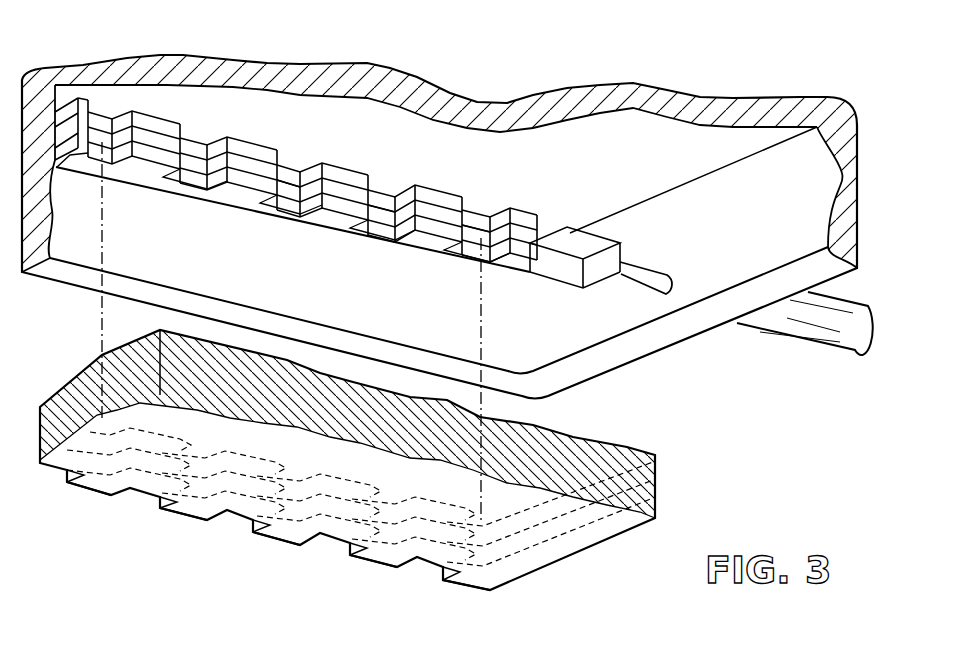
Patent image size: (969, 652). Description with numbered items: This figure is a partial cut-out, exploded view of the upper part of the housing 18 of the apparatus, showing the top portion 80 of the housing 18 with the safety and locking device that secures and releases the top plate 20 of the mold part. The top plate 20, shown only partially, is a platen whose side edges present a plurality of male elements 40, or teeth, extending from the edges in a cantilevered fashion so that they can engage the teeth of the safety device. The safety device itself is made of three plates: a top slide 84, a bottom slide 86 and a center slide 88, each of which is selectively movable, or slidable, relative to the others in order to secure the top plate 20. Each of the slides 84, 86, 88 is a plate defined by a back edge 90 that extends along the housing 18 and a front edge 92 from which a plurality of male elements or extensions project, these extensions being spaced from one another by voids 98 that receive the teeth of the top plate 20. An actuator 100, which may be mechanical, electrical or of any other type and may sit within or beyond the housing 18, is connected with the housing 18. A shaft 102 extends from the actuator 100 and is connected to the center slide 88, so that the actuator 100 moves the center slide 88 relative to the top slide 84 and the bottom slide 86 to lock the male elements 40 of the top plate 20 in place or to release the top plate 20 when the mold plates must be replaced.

The housing 18 is at (634, 157).
The top plate 20 is at (623, 462).
The male elements 40 is at (85, 488).
The top portion 80 is at (583, 143).
The top slide 84 is at (345, 173).
The bottom slide 86 is at (337, 154).
The center slide 88 is at (245, 170).
The back edge 90 is at (198, 201).
The front edge 92 is at (162, 118).
The voids 98 is at (337, 210).
The actuator 100 is at (798, 357).
The shaft 102 is at (658, 277).